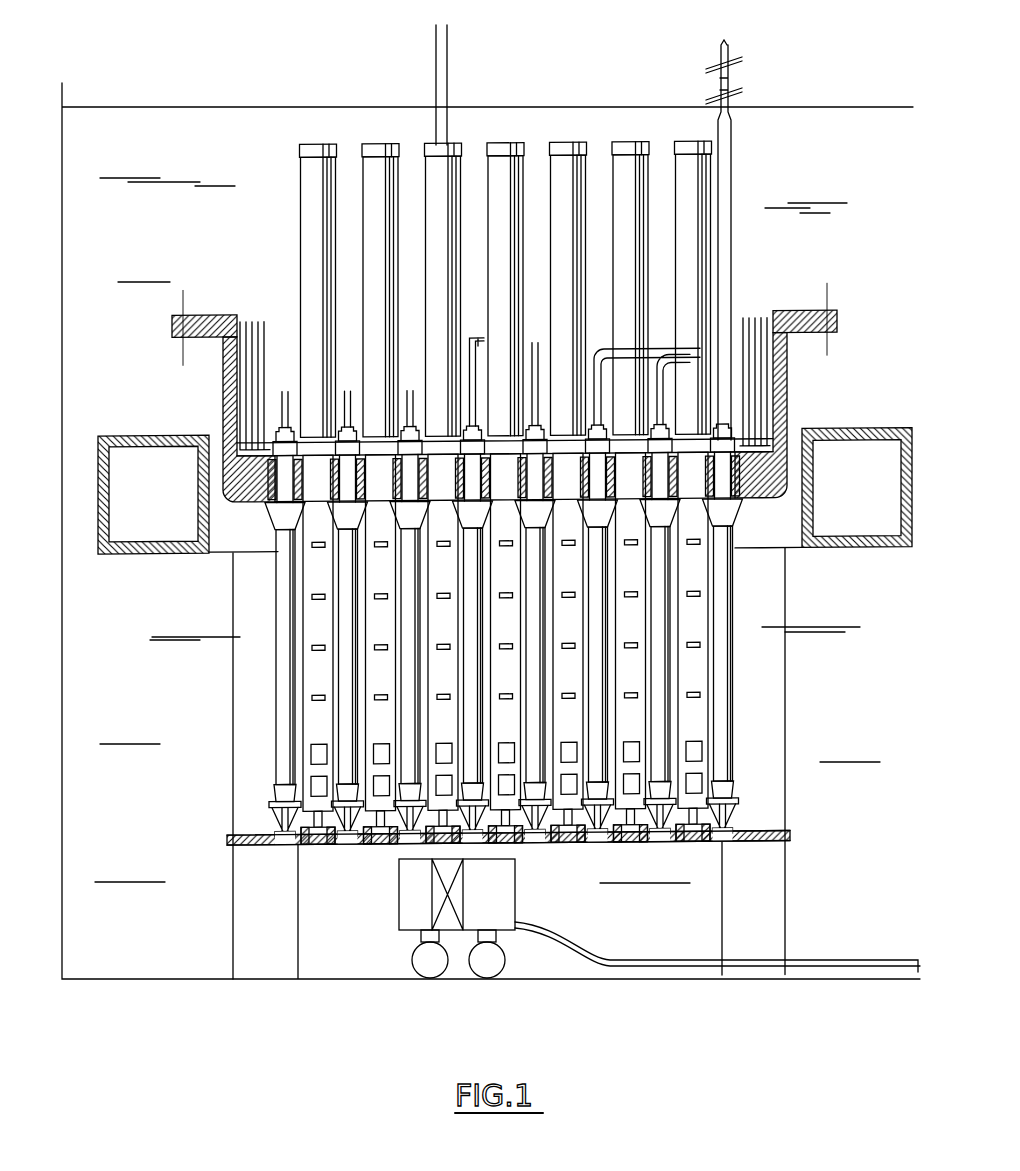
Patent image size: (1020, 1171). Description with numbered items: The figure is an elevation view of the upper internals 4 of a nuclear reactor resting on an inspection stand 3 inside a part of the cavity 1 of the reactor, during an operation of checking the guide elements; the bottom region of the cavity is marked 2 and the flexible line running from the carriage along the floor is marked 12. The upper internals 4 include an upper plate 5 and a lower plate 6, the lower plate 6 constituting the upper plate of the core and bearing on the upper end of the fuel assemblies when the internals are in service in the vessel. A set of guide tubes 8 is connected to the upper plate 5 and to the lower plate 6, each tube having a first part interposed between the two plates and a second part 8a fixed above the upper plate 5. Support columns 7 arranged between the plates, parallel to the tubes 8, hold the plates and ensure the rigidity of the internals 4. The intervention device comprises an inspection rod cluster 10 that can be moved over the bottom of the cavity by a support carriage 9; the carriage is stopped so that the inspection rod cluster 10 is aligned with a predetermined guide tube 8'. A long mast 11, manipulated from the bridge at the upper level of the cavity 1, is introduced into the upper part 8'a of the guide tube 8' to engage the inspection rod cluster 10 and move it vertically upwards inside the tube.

The cavity 1 is at (491, 531).
The floor / lower region 2 is at (763, 1010).
The inspection stand 3 is at (113, 427).
The upper internals 4 is at (737, 191).
The upper plate 5 is at (787, 394).
The lower plate 6 is at (765, 840).
The support columns 7 is at (348, 713).
The guide tubes 8 is at (571, 648).
The predetermined guide tube 8' is at (504, 623).
The second part of guide tube 8a is at (435, 190).
The upper part of the guide tube 8'a is at (478, 241).
The support carriage 9 is at (497, 918).
The inspection rod cluster 10 is at (450, 918).
The mast 11 is at (432, 62).
The hose / cable 12 is at (632, 950).